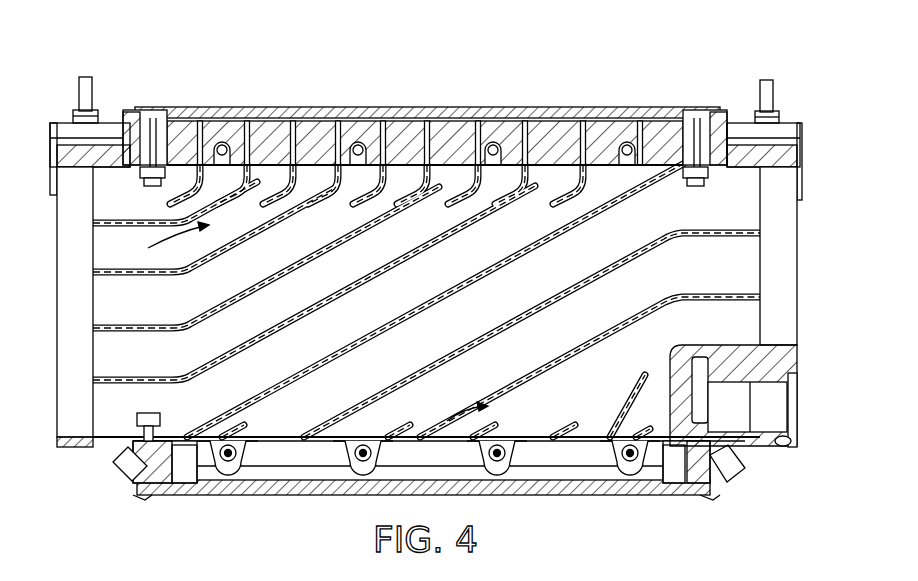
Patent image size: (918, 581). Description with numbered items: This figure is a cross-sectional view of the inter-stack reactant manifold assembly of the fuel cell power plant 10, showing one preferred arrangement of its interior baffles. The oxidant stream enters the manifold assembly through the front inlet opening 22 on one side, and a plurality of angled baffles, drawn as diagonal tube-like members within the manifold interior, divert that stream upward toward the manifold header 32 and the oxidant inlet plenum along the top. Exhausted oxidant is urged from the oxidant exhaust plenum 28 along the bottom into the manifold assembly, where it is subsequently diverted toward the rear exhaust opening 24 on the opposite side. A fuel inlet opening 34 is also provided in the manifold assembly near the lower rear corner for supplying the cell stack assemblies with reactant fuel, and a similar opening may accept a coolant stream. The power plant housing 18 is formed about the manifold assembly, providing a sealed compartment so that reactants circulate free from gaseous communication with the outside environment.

The fuel cell power plant 10 is at (238, 78).
The power plant housing 18 is at (540, 108).
The front inlet opening 22 is at (50, 290).
The rear exhaust opening 24 is at (782, 240).
The oxidant exhaust plenum 28 is at (312, 452).
The manifold header 32 is at (409, 124).
The fuel inlet opening 34 is at (834, 406).